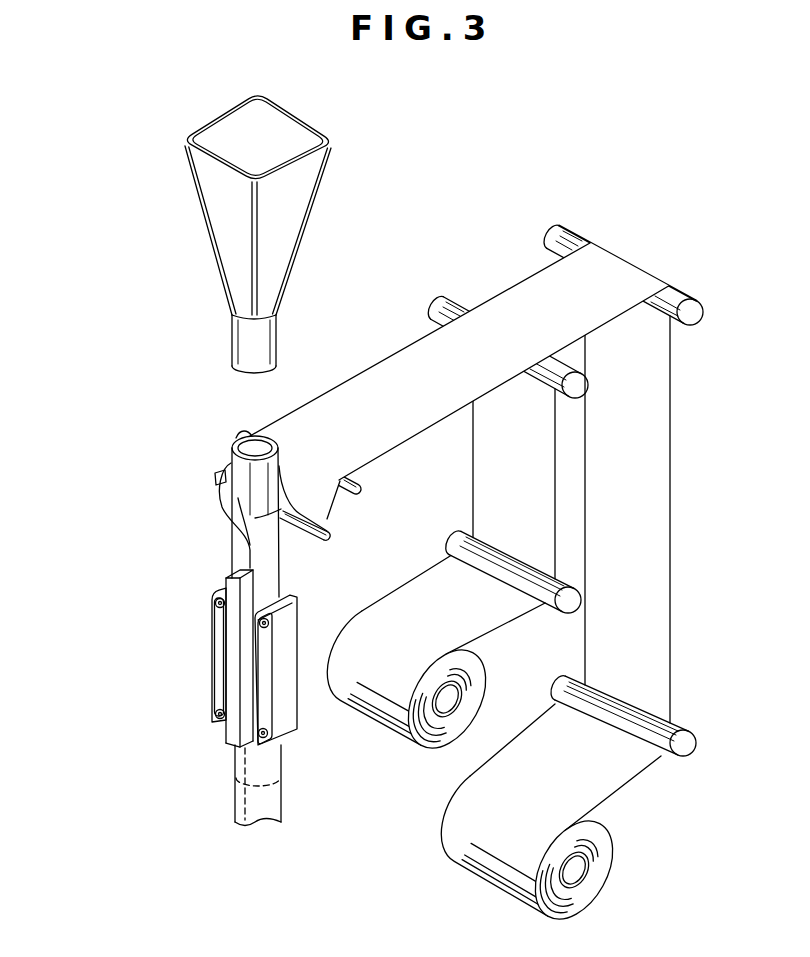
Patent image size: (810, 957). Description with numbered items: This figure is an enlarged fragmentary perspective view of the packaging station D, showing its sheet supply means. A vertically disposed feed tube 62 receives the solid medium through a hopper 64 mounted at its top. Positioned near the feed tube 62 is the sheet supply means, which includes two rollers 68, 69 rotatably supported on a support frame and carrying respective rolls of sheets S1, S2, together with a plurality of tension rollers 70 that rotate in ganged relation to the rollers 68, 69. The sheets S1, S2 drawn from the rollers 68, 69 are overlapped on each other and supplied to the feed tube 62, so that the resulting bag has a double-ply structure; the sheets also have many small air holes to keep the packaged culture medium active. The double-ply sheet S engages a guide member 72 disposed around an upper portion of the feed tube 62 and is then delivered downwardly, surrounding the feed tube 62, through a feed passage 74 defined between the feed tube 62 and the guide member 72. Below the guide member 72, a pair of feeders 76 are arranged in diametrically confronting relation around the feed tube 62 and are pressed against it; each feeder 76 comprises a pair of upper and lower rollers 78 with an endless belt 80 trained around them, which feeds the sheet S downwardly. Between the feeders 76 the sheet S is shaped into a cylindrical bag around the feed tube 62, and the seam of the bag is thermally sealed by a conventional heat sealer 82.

The feed tube 62 is at (232, 462).
The hopper 64 is at (218, 223).
The roller 68 is at (446, 735).
The roller 69 is at (592, 887).
The tension rollers 70 is at (444, 298).
The guide member 72 is at (288, 517).
The feed passage 74 is at (238, 500).
The feeders 76 is at (210, 668).
The upper and lower rollers 78 is at (212, 601).
The endless belt 80 is at (212, 635).
The heat sealer 82 is at (230, 732).
The double-ply sheet S is at (312, 408).
The sheet S1 is at (488, 455).
The sheet S2 is at (660, 520).
The packaging station D is at (128, 722).